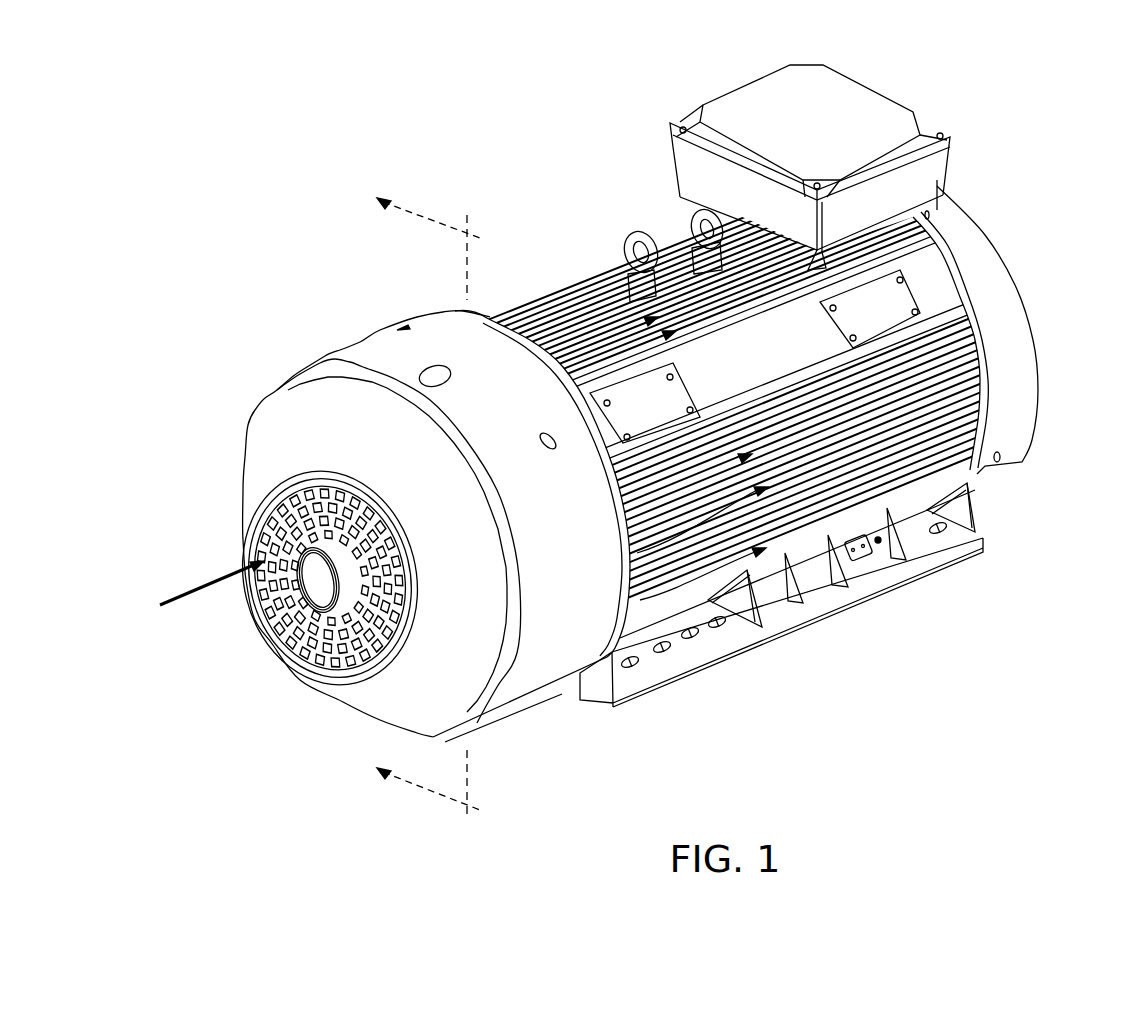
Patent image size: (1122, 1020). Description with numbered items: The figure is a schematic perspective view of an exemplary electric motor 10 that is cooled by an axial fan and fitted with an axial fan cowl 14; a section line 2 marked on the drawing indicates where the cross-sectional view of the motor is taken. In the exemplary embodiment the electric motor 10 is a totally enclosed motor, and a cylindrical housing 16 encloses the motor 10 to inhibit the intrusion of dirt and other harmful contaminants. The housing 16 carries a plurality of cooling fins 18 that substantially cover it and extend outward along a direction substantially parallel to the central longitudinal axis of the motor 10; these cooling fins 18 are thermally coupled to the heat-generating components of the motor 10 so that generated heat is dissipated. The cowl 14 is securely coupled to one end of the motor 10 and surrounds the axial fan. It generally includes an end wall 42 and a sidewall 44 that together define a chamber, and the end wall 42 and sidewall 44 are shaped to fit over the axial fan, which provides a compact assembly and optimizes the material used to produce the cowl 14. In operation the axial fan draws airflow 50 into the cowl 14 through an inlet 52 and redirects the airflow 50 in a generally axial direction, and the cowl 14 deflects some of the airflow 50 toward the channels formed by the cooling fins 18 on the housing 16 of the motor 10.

The electric motor 10 is at (236, 307).
The line 2- 2 is at (428, 495).
The axial fan cowl 14 is at (388, 722).
The cylindrical housing 16 is at (806, 646).
The cooling fins 18 is at (976, 473).
The end wall 42 is at (268, 432).
The sidewall 44 is at (427, 325).
The airflow 50 is at (203, 588).
The inlet 52 is at (292, 603).